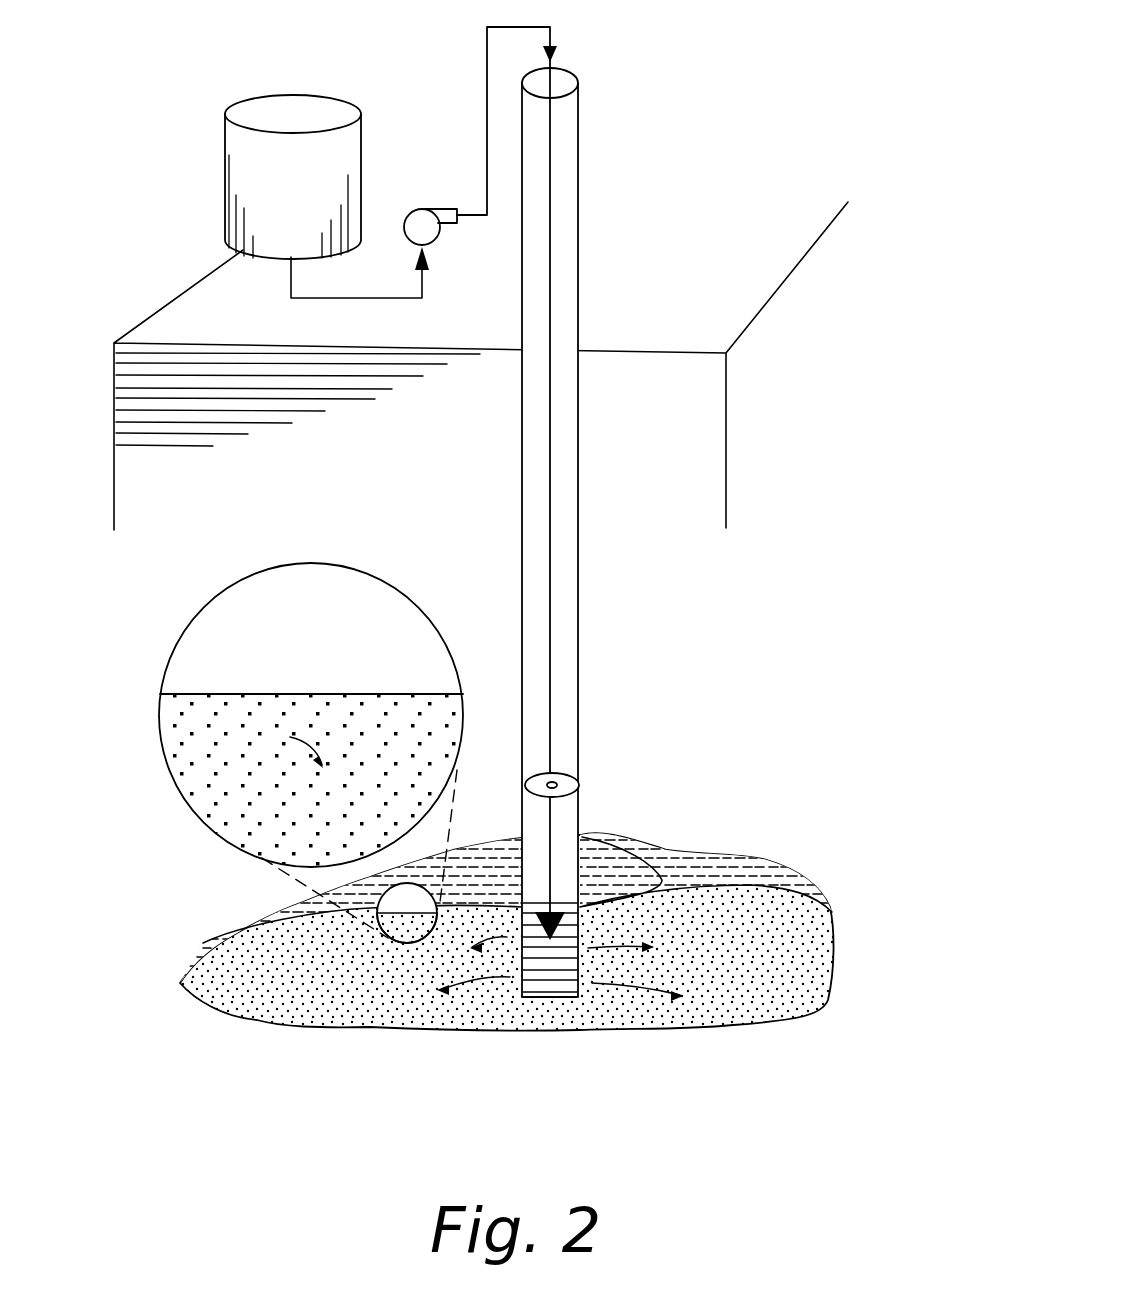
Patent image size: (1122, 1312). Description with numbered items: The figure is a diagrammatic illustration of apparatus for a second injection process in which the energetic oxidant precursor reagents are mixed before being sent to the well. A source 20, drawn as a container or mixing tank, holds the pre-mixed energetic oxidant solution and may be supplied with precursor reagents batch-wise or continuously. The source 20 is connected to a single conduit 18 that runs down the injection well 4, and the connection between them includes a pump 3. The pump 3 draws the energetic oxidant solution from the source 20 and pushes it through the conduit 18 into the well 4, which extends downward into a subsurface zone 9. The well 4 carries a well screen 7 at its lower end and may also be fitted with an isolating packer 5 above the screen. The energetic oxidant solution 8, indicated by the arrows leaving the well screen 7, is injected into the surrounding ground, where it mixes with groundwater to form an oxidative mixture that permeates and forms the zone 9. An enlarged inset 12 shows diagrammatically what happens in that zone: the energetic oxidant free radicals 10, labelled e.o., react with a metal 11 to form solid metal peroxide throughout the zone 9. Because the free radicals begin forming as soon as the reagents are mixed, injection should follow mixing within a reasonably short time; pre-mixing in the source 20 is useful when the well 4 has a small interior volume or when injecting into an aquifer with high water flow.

The source 20 is at (293, 108).
The pump 3 is at (422, 210).
The injection well 4 is at (580, 692).
The single conduit 18 is at (552, 617).
The isolating packer 5 is at (578, 780).
The well screen 7 is at (552, 1000).
The energetic oxidant solution 8 is at (560, 969).
The zone 9 is at (840, 960).
The energetic oxidant free radicals 10 is at (483, 720).
The metal 11 is at (158, 728).
The inset 12 is at (192, 777).